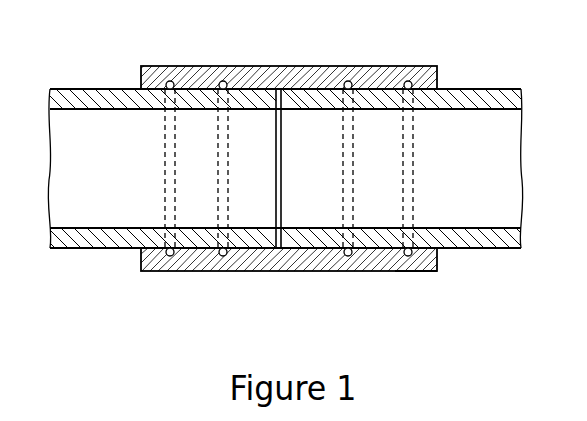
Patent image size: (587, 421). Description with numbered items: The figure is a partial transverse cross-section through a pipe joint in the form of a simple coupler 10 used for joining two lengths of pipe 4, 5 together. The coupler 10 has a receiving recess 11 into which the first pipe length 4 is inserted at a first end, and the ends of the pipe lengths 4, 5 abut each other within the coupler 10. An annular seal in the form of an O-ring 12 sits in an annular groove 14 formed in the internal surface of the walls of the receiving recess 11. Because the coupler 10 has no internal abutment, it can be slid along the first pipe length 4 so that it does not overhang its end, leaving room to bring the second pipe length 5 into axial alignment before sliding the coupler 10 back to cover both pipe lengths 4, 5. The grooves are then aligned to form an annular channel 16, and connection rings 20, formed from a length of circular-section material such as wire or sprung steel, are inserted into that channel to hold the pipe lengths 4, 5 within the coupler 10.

The first pipe length 4 is at (490, 250).
The second pipe length 5 is at (83, 250).
The coupler 10 is at (190, 66).
The receiving recess 11 is at (452, 118).
The O-ring 12 is at (405, 272).
The annular groove 14 is at (164, 128).
The annular channel 16 is at (232, 128).
The connection ring 20 is at (223, 82).